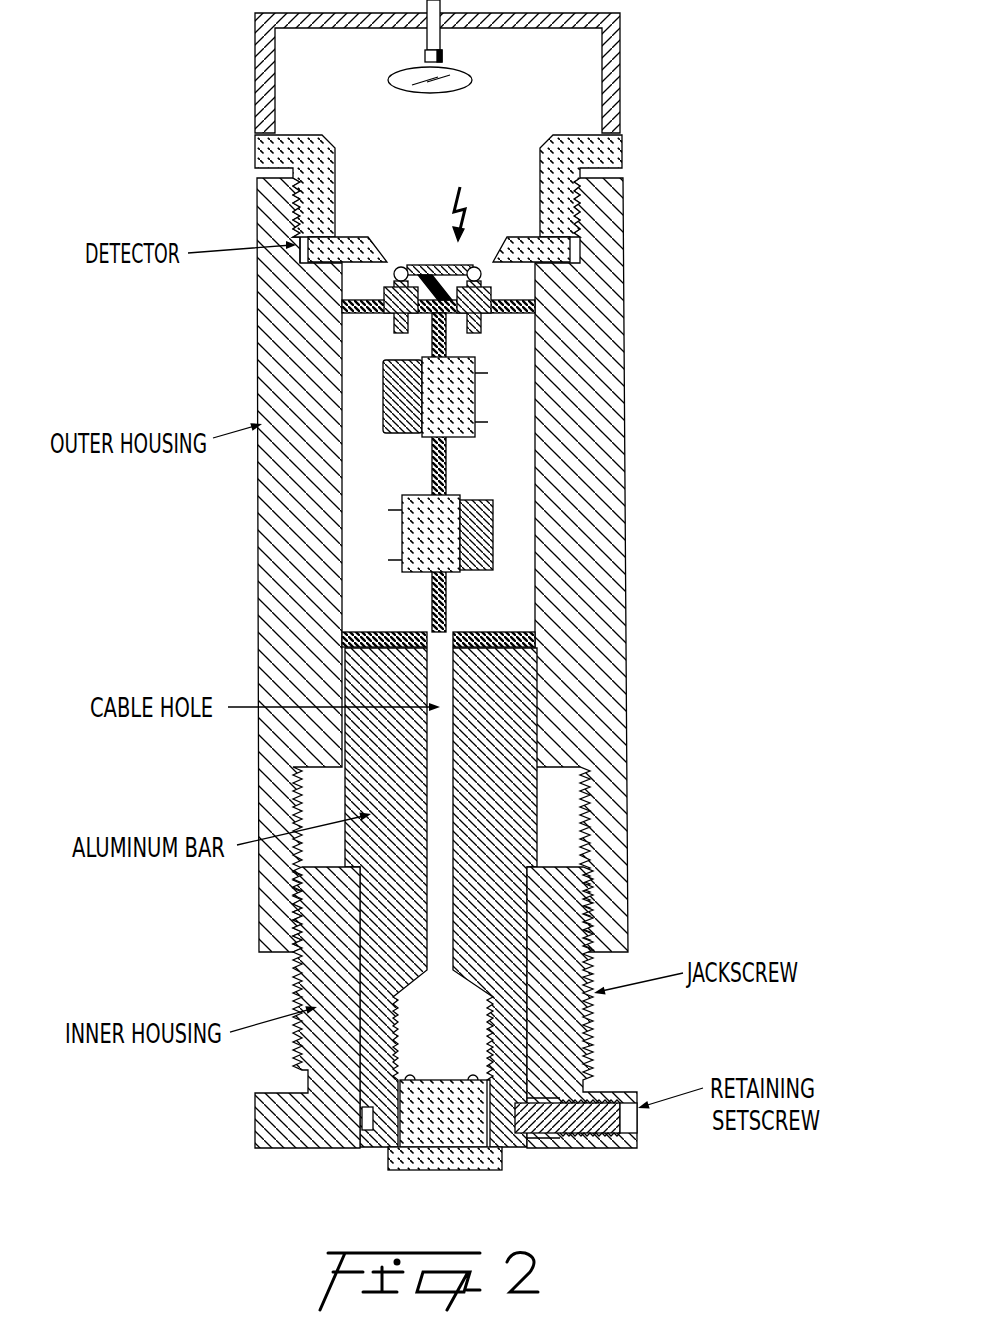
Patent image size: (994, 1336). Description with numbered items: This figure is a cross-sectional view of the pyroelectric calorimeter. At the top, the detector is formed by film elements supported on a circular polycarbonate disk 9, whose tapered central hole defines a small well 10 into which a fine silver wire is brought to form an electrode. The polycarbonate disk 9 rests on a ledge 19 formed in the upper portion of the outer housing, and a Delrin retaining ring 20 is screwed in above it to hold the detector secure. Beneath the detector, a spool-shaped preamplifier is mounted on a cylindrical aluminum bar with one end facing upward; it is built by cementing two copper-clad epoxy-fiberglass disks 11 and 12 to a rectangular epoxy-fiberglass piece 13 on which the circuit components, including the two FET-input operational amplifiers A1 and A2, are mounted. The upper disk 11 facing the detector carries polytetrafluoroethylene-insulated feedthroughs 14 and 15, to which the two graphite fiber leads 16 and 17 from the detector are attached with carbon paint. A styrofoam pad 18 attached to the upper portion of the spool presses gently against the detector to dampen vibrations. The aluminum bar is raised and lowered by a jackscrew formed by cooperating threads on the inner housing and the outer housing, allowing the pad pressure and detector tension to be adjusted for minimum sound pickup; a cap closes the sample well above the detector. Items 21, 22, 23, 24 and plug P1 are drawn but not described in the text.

The polycarbonate disk 9 is at (352, 237).
The well 10 is at (462, 200).
The copper-clad epoxy-fiberglass disk 11 is at (352, 313).
The copper-clad epoxy-fiberglass disk 12 is at (493, 633).
The rectangular epoxy-fiberglass piece 13 is at (445, 472).
The polytetrafluoroethylene-insulated feedthrough 14 is at (395, 315).
The polytetrafluoroethylene-insulated feedthrough 15 is at (483, 315).
The graphite fiber lead 16 is at (394, 274).
The graphite fiber lead 17 is at (481, 275).
The styrofoam pad 18 is at (430, 265).
The ledge 19 is at (304, 245).
The retaining ring 20 is at (330, 143).
The connection 21 is at (453, 267).
The cap 22 is at (621, 68).
The rod 23 is at (441, 31).
The lens 24 is at (402, 75).
The operational amplifier A1 is at (482, 403).
The operational amplifier A2 is at (488, 531).
The plug P1 is at (395, 1154).